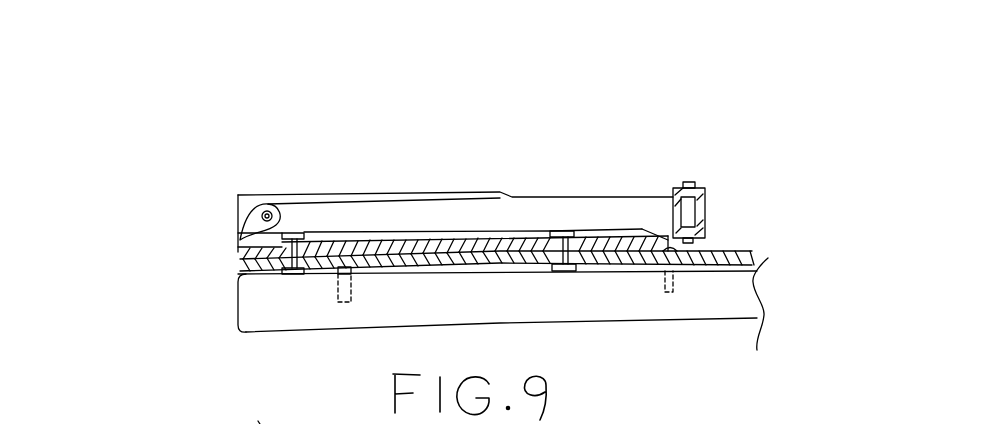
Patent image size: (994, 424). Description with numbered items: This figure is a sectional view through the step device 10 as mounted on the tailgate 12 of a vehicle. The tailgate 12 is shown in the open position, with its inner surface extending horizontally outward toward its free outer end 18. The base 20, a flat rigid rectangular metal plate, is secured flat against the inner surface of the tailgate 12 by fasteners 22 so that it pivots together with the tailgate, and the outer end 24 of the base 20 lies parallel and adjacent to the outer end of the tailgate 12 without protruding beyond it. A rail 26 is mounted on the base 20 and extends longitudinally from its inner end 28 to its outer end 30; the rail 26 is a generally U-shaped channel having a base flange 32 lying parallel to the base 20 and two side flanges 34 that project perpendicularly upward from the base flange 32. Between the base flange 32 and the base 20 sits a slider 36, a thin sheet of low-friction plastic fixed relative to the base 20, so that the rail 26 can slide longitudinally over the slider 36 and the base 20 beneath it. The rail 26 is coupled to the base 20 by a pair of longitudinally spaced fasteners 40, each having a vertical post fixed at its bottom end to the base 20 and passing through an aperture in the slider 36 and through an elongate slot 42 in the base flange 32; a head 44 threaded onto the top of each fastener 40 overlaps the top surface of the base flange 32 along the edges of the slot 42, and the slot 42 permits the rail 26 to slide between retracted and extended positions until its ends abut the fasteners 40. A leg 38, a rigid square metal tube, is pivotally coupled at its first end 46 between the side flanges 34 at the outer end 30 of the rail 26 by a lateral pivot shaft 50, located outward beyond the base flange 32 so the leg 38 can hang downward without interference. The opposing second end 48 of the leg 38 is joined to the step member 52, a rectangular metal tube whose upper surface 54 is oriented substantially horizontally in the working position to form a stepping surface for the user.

The step device 10 is at (447, 104).
The tailgate 12 is at (607, 312).
The free outer end 18 is at (238, 312).
The base 20 is at (440, 268).
The fasteners 22 is at (672, 292).
The outer end of the base 24 is at (240, 271).
The rails 26 is at (631, 193).
The inner ends of the rails 28 is at (700, 246).
The outer ends of the rails 30 is at (238, 197).
The base flange 32 is at (465, 233).
The side flanges 34 is at (360, 192).
The slider 36 is at (507, 242).
The leg 38 is at (407, 213).
The fasteners 40 is at (294, 240).
The slot 42 is at (327, 241).
The head 44 is at (290, 233).
The first end 46 is at (257, 223).
The second end 48 is at (705, 200).
The lateral pivot shaft 50 is at (240, 240).
The step member 52 is at (705, 213).
The upper surface 54 is at (690, 185).